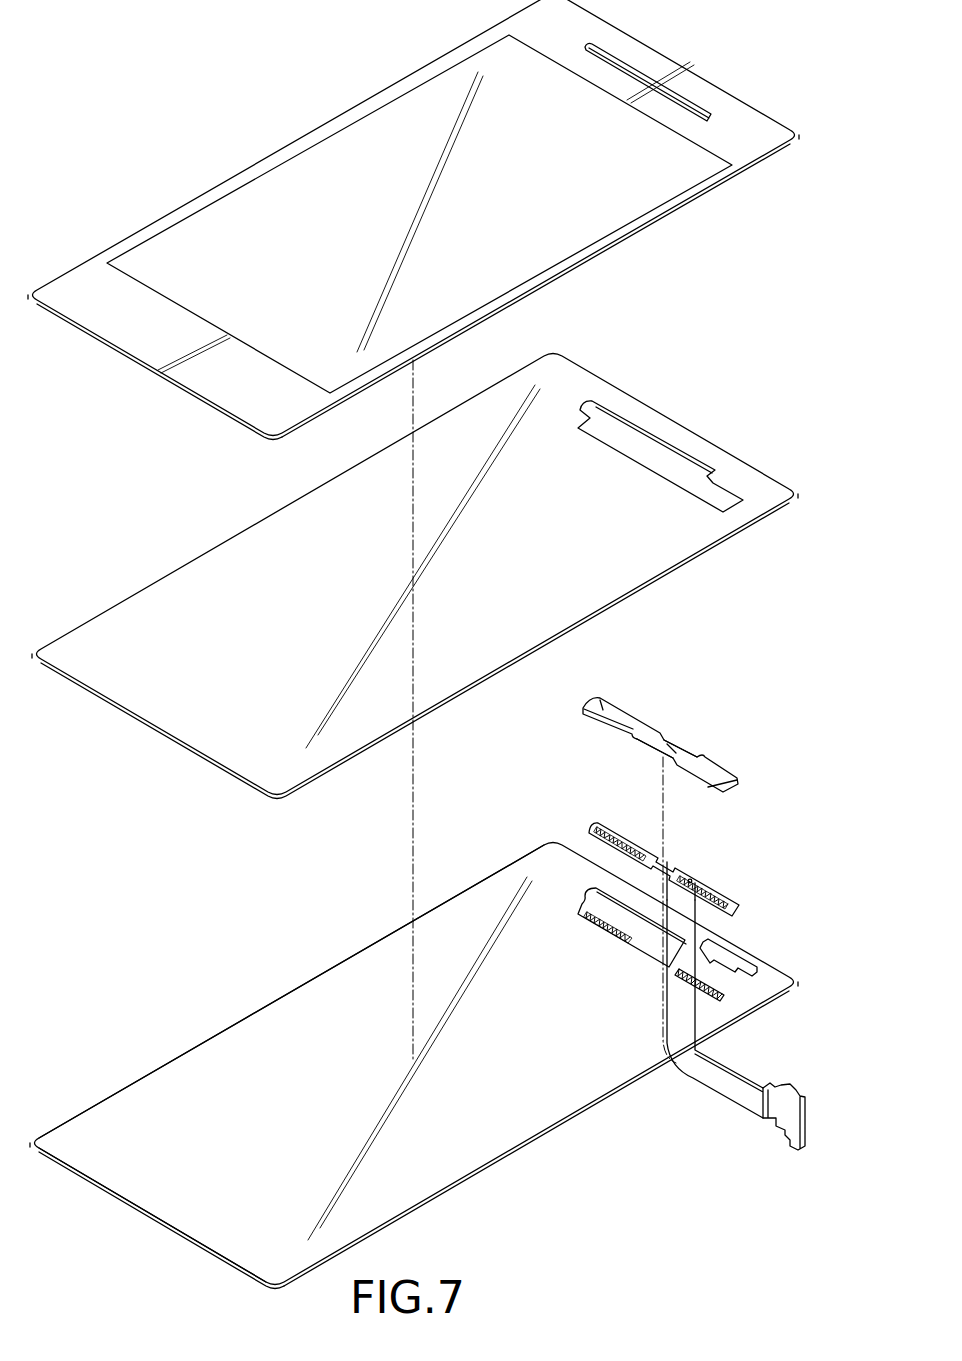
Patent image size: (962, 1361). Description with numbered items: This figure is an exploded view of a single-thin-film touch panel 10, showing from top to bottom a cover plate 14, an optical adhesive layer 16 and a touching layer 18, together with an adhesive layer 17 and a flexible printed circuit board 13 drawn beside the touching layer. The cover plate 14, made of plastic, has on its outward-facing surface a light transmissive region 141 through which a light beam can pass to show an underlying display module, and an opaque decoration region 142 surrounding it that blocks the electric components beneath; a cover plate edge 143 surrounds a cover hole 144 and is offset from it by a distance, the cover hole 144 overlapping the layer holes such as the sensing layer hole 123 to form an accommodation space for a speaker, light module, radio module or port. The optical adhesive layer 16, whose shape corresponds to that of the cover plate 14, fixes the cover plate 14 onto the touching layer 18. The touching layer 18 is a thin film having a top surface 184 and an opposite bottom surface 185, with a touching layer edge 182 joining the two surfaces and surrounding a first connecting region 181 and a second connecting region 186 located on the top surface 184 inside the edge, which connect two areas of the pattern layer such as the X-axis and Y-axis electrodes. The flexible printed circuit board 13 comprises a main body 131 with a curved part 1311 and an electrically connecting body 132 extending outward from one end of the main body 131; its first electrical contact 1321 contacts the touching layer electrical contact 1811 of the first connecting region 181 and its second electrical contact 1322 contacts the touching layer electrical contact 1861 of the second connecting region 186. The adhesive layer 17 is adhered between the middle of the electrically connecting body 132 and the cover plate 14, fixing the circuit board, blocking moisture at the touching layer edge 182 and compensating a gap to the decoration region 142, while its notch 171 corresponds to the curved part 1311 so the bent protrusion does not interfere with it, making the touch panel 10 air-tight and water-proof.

The touch panel 10 is at (42, 14).
The cover plate 14 is at (419, 220).
The light transmissive region 141 is at (310, 168).
The decoration region 142 is at (762, 118).
The cover plate edge 143 is at (88, 248).
The cover hole 144 is at (680, 101).
The optical adhesive layer 16 is at (217, 751).
The adhesive layer 17 is at (682, 745).
The notch 171 is at (688, 748).
The flexible printed circuit board 13 is at (715, 969).
The main body 131 is at (773, 1090).
The curved part 1311 is at (697, 853).
The electrically connecting body 132 is at (728, 888).
The first electrical contact 1321 is at (740, 908).
The second electrical contact 1322 is at (618, 843).
The touching layer 18 is at (433, 1066).
The first connecting region 181 is at (709, 1007).
The touching layer electrical contact 1811 is at (747, 1012).
The touching layer edge 182 is at (110, 1092).
The top surface 184 is at (134, 1177).
The bottom surface 185 is at (150, 1222).
The sensing layer hole 123 is at (755, 970).
The second connecting region 186 is at (584, 885).
The touching layer electrical contact 1861 is at (590, 895).